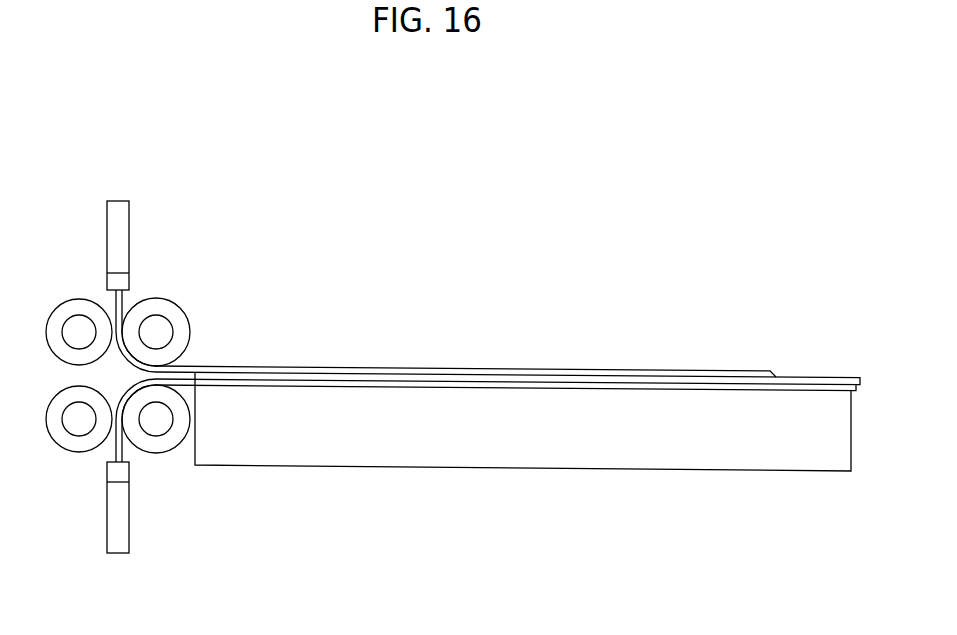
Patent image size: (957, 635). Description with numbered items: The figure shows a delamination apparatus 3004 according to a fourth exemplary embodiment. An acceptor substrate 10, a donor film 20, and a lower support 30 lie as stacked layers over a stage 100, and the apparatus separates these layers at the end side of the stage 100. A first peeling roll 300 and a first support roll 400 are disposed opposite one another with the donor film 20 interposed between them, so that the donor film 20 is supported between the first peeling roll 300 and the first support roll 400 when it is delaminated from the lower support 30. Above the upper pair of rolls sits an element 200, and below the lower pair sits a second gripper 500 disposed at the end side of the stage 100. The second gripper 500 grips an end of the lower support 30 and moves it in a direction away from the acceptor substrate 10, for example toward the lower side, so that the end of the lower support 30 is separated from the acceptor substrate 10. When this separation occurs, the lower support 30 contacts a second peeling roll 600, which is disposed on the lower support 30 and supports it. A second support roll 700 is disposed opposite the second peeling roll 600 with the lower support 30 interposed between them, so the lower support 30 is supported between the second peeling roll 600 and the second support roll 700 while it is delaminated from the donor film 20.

The delamination apparatus 3004 is at (505, 148).
The acceptor substrate 10 is at (368, 377).
The donor film 20 is at (533, 373).
The lower support 30 is at (627, 387).
The stage 100 is at (482, 455).
The first cylinder 200 is at (122, 201).
The first peeling roll 300 is at (157, 321).
The first support roll 400 is at (80, 321).
The second gripper 500 is at (122, 553).
The second peeling roll 600 is at (157, 430).
The second support roll 700 is at (80, 430).